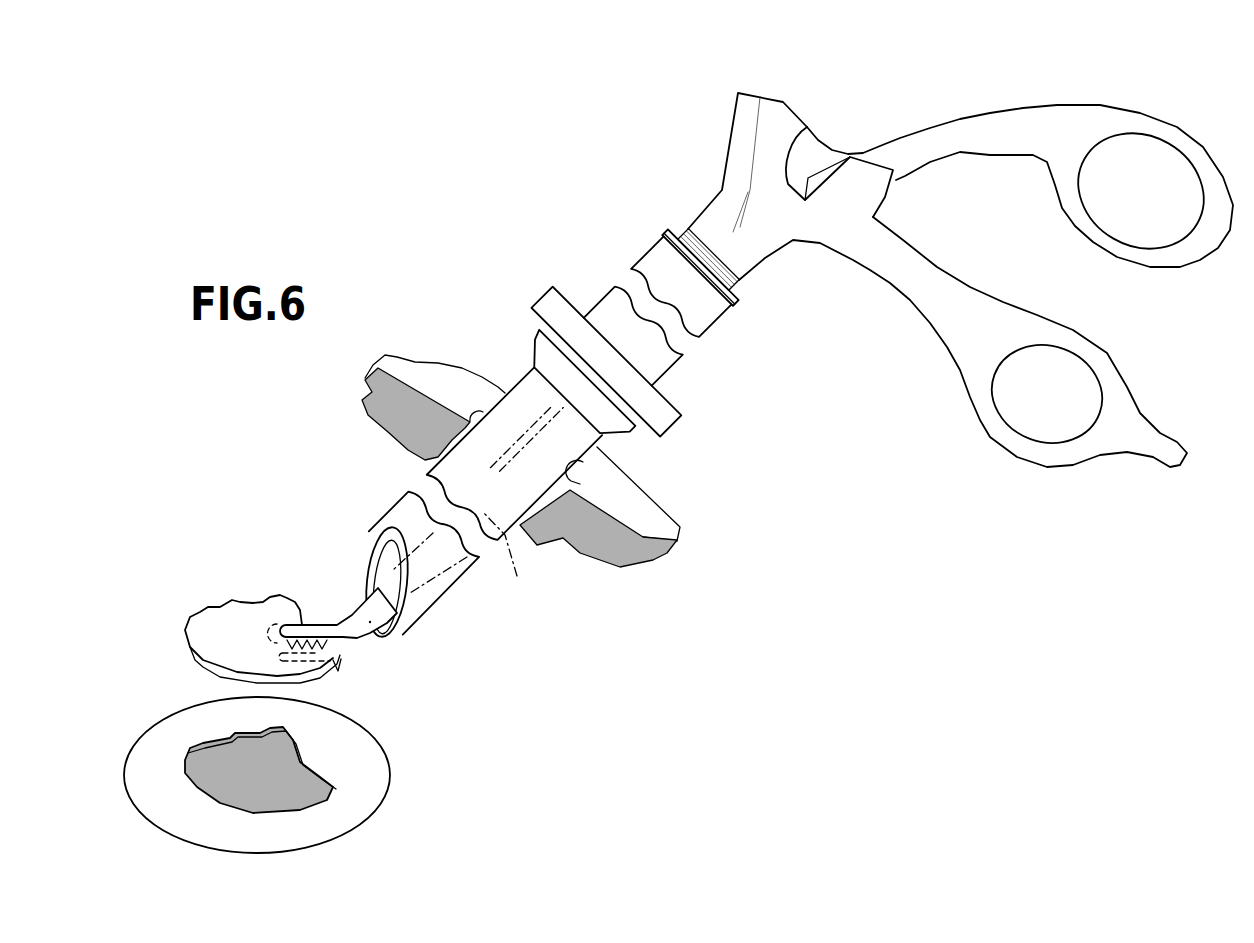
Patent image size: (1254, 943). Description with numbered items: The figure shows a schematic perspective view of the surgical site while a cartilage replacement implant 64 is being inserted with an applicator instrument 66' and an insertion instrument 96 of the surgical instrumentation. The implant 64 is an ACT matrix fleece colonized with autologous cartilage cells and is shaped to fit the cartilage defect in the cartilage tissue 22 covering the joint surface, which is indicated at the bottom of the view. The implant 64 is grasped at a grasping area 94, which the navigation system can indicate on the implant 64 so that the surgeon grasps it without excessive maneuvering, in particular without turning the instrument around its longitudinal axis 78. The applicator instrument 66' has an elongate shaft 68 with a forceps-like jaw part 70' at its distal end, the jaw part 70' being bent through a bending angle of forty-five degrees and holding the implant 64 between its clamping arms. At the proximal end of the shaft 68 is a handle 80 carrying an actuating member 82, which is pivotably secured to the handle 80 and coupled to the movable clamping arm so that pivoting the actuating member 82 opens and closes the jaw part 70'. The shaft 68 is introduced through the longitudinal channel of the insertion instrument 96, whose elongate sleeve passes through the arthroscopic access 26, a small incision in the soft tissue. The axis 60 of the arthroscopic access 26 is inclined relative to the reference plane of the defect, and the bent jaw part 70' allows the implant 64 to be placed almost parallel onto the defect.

The cartilage tissue 22 is at (372, 790).
The arthroscopic access 26 is at (572, 481).
The axis 60 is at (545, 420).
The cartilage replacement implant 64 is at (236, 575).
The applicator instrument 66' is at (696, 164).
The shaft 68 is at (447, 592).
The jaw part 70' is at (332, 589).
The longitudinal axis 78 is at (517, 576).
The handle 80 is at (878, 118).
The actuating member 82 is at (1106, 88).
The grasping area 94 is at (340, 672).
The insertion instrument 96 is at (375, 477).